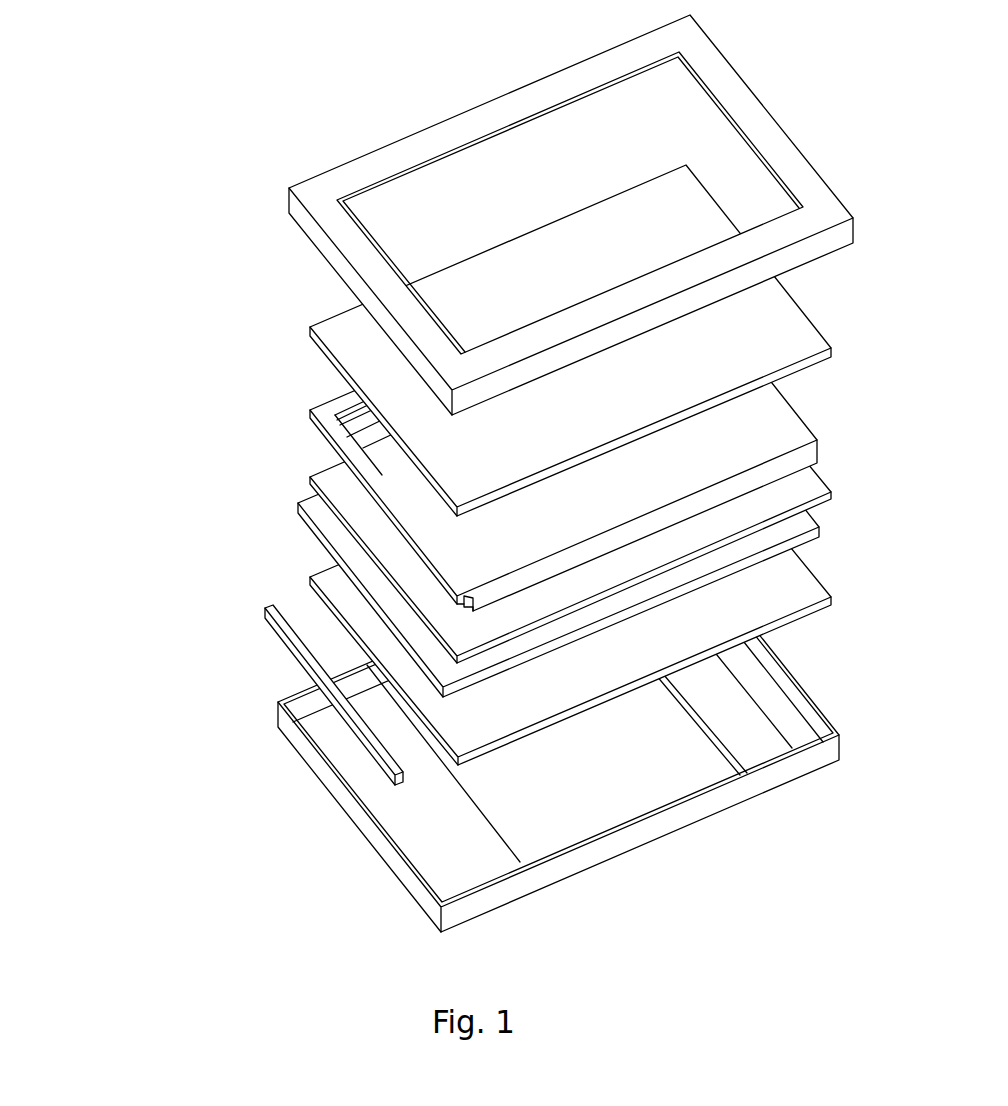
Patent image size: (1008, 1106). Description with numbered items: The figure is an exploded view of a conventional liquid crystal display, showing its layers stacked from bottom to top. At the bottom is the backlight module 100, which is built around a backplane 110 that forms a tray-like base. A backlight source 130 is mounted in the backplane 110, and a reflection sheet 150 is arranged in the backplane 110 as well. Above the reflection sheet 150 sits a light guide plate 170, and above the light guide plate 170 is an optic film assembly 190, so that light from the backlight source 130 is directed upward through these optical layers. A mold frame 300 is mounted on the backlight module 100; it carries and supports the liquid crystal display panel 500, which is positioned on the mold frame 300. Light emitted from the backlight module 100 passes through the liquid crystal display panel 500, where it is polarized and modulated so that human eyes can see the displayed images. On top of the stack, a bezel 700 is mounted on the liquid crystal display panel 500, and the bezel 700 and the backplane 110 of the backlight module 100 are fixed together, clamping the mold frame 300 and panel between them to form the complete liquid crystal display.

The backlight module 100 is at (439, 622).
The backplane 110 is at (288, 728).
The backlight source 130 is at (286, 638).
The reflection sheet 150 is at (337, 590).
The light guide plate 170 is at (335, 530).
The optic film assembly 190 is at (499, 488).
The mold frame 300 is at (325, 415).
The liquid crystal display panel 500 is at (325, 333).
The bezel 700 is at (325, 202).